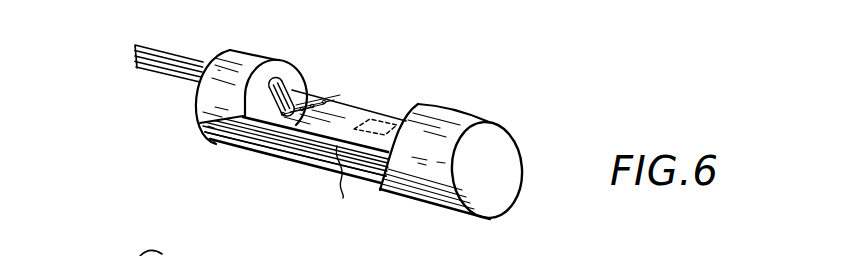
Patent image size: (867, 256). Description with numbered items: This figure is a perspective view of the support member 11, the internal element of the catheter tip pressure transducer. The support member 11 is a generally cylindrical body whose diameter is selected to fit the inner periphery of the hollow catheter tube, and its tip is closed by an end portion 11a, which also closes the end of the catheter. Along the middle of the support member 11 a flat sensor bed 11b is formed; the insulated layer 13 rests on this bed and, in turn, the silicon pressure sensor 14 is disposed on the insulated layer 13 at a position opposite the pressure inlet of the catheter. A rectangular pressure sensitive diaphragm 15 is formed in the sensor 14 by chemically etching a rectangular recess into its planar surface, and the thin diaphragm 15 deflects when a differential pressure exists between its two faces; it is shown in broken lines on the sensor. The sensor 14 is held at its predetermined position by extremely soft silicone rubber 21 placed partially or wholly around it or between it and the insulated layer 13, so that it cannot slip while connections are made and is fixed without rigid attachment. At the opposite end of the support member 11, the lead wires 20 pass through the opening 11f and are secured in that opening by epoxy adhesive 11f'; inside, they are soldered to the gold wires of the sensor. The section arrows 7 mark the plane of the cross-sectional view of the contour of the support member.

The lead wires 20 is at (155, 73).
The opening 11f is at (222, 97).
The epoxy adhesive 11f' is at (301, 131).
The insulated layer 13 is at (222, 124).
The silicone rubber 21 is at (225, 143).
The silicon pressure sensor 14 is at (350, 112).
The pressure sensitive diaphragm 15 is at (381, 119).
The flat sensor bed 11b is at (343, 198).
The end portion 11a is at (509, 179).
The support member 11 is at (442, 194).
The section line FIG. 7 is at (233, 173).